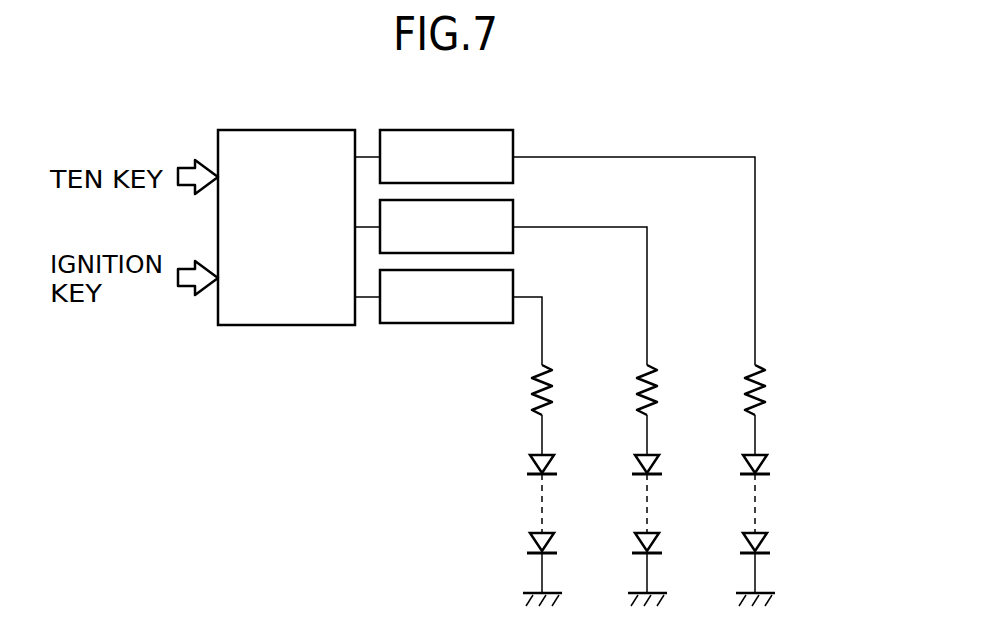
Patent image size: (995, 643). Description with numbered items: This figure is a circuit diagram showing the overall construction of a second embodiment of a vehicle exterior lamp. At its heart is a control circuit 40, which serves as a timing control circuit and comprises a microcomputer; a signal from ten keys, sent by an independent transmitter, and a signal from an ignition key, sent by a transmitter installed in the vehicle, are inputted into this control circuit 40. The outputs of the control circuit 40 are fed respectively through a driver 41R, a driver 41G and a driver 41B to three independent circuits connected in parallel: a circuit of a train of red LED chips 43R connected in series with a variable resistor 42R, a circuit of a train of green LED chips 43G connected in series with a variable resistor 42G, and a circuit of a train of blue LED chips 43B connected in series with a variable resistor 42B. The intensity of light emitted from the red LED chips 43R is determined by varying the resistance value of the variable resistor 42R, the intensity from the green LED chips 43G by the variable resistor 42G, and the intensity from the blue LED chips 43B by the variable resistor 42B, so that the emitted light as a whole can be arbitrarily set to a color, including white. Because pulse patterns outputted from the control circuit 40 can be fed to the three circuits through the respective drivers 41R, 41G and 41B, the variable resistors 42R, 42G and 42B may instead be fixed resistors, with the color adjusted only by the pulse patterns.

The control circuit 40 is at (282, 130).
The driver 41R is at (447, 130).
The driver 41G is at (513, 203).
The driver 41B is at (513, 275).
The variable resistor 42B is at (566, 390).
The variable resistor 42G is at (672, 390).
The variable resistor 42R is at (779, 390).
The blue LED chips 43B is at (523, 453).
The green LED chips 43G is at (629, 453).
The red LED chips 43R is at (775, 451).